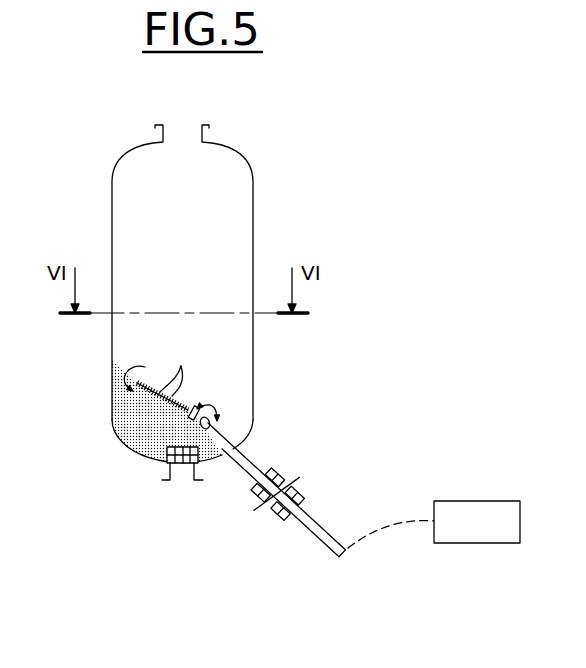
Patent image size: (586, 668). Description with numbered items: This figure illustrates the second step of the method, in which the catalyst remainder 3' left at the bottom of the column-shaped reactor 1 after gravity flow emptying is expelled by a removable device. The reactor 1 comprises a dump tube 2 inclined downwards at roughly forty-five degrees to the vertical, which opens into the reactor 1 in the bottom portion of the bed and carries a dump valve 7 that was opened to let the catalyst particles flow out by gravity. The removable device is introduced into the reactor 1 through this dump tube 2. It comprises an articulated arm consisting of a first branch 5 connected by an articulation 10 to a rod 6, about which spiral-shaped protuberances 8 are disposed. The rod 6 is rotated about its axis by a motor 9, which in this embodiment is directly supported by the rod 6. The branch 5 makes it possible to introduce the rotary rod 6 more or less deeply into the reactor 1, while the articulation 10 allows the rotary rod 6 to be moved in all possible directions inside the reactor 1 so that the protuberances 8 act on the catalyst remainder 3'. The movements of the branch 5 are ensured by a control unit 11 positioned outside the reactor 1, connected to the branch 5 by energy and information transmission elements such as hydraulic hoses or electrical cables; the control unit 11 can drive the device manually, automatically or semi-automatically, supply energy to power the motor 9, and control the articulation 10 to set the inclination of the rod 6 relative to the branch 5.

The reactor 1 is at (112, 231).
The dump tube 2 is at (310, 489).
The catalyst remainder 3' is at (142, 411).
The first branch 5 is at (276, 486).
The rod 6 is at (139, 382).
The dump valve 7 is at (252, 456).
The spiral-shaped protuberances 8 is at (181, 366).
The motor 9 is at (196, 410).
The articulation 10 is at (212, 416).
The control unit 11 is at (490, 534).